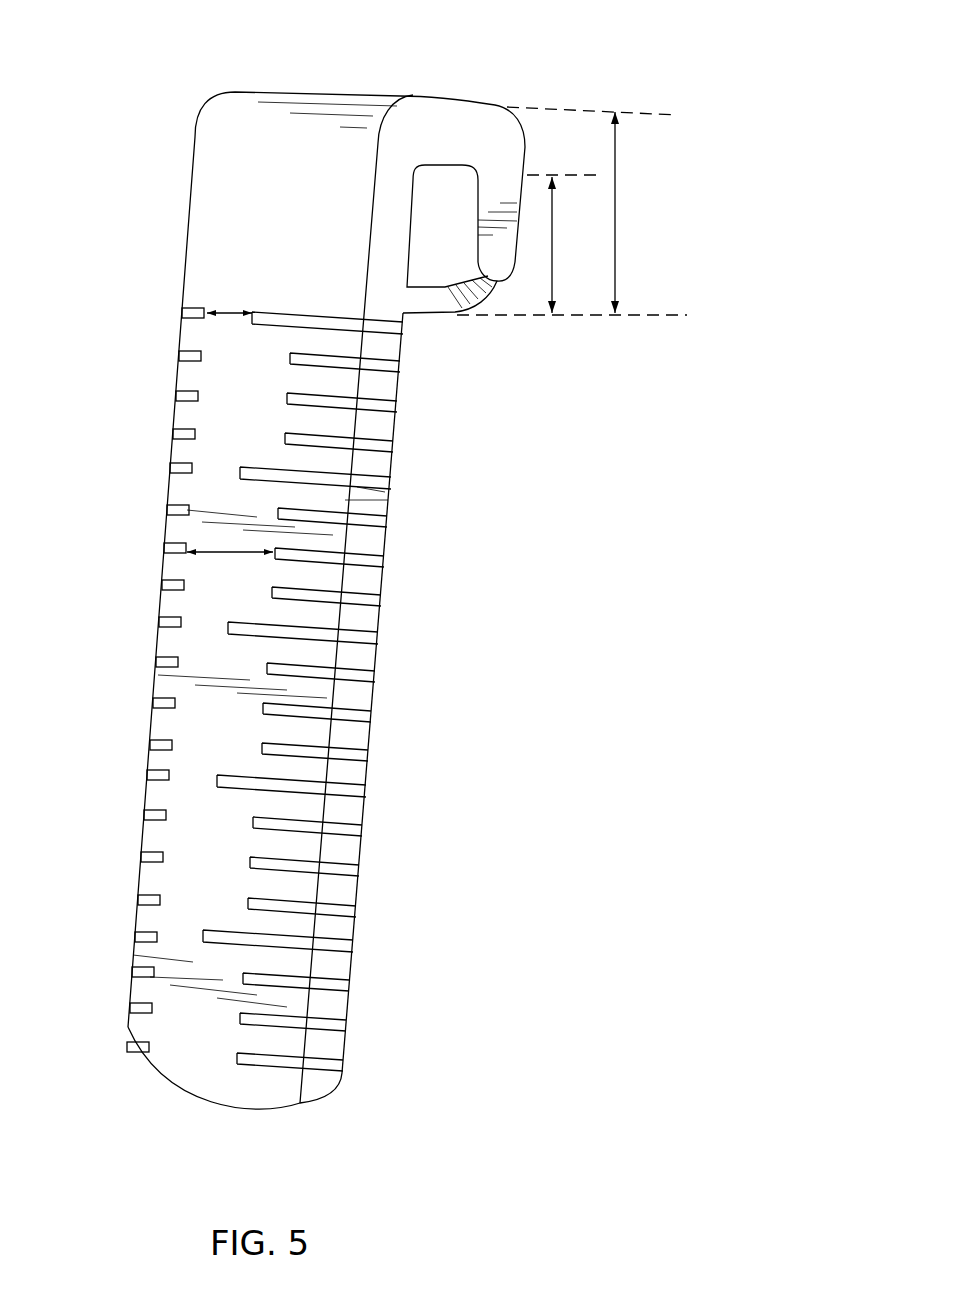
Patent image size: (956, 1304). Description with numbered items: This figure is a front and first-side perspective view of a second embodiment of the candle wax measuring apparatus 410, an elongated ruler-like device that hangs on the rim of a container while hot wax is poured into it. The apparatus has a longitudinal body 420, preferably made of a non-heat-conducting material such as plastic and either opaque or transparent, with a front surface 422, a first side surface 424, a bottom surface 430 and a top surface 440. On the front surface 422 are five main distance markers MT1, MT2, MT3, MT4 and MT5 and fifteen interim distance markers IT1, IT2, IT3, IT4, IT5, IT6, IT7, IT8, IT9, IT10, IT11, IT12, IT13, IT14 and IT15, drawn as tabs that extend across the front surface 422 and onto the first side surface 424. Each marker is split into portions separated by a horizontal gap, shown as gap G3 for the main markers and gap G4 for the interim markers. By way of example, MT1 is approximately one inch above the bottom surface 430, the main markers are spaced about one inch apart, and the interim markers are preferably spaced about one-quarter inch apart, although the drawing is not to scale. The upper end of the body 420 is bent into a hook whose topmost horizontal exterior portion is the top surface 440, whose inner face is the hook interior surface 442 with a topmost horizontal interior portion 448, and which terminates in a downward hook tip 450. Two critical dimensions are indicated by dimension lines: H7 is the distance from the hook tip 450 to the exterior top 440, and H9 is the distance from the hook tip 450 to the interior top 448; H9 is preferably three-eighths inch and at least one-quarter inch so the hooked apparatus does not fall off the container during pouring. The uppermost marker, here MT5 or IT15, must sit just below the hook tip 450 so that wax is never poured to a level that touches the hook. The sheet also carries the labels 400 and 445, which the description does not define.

The hanger device 400 is at (206, 572).
The candle wax measuring apparatus 410 is at (107, 662).
The longitudinal body 420 is at (540, 100).
The front surface 422 is at (226, 1100).
The first side surface 424 is at (367, 637).
The bottom surface 430 is at (318, 1093).
The top surface 440 is at (456, 220).
The hook interior surface 442 is at (443, 265).
The top portion of hanger 445 is at (287, 72).
The topmost horizontal interior portion 448 is at (457, 163).
The hook tip 450 is at (427, 317).
The main distance marker MT1 is at (203, 934).
The main distance marker MT2 is at (217, 779).
The main distance marker MT3 is at (228, 626).
The main distance marker MT4 is at (240, 471).
The main distance marker MT5 is at (305, 311).
The interim distance marker IT1 is at (305, 1058).
The interim distance marker IT2 is at (308, 1018).
The interim distance marker IT3 is at (311, 978).
The interim distance marker IT4 is at (316, 903).
The interim distance marker IT5 is at (319, 863).
The interim distance marker IT6 is at (322, 823).
The interim distance marker IT7 is at (328, 748).
The interim distance marker IT8 is at (331, 708).
The interim distance marker IT9 is at (334, 668).
The interim distance marker IT10 is at (340, 592).
The interim distance marker IT11 is at (342, 552).
The interim distance marker IT12 is at (345, 511).
The interim distance marker IT13 is at (285, 437).
The interim distance marker IT14 is at (287, 397).
The interim distance marker IT15 is at (290, 357).
The gap G3 is at (229, 302).
The gap G4 is at (230, 542).
The distance H7 is at (572, 213).
The distance H9 is at (563, 244).